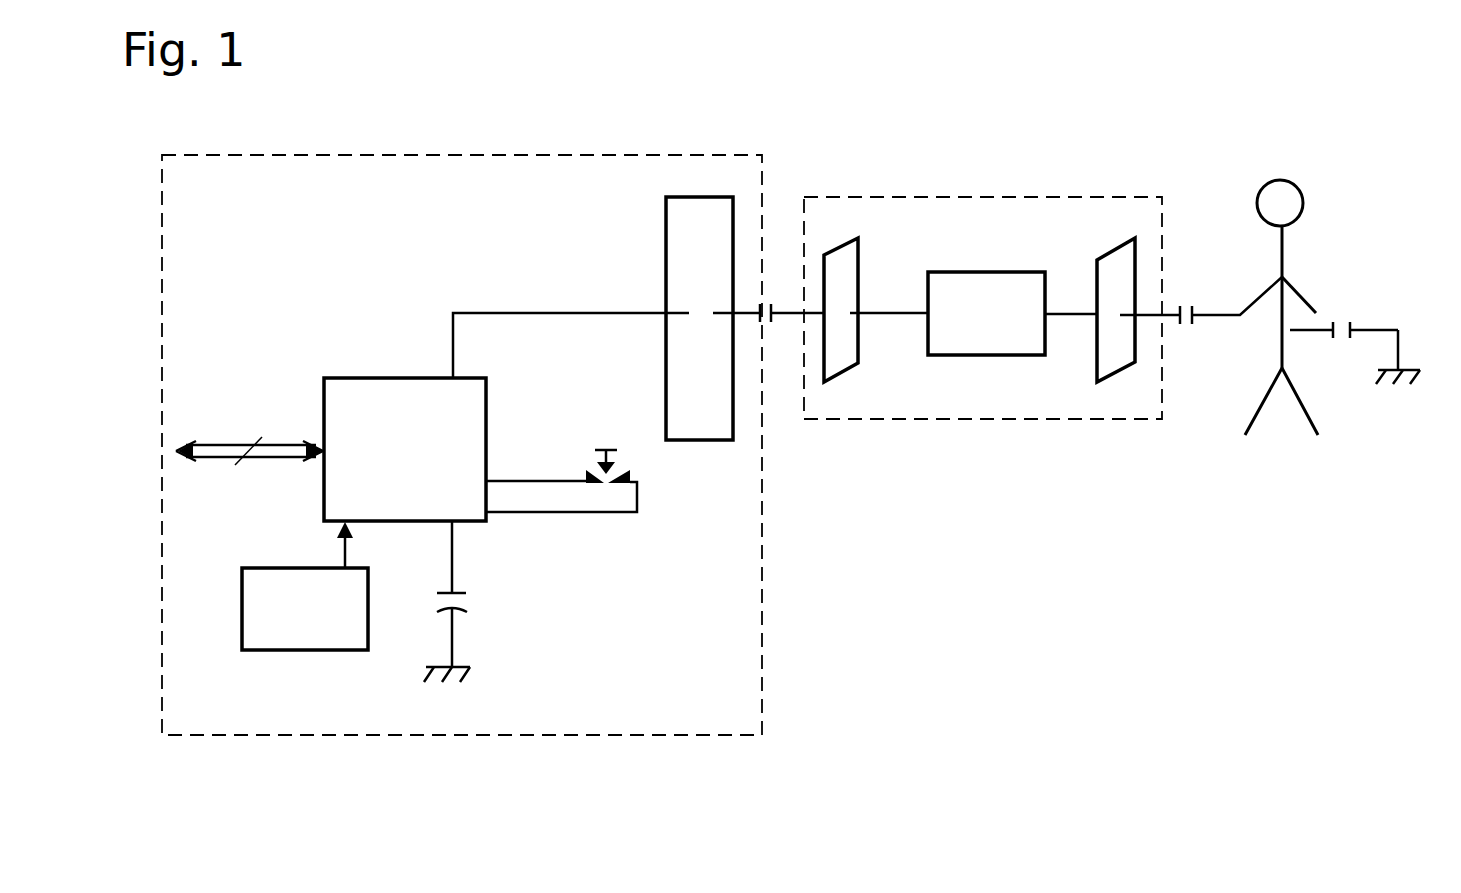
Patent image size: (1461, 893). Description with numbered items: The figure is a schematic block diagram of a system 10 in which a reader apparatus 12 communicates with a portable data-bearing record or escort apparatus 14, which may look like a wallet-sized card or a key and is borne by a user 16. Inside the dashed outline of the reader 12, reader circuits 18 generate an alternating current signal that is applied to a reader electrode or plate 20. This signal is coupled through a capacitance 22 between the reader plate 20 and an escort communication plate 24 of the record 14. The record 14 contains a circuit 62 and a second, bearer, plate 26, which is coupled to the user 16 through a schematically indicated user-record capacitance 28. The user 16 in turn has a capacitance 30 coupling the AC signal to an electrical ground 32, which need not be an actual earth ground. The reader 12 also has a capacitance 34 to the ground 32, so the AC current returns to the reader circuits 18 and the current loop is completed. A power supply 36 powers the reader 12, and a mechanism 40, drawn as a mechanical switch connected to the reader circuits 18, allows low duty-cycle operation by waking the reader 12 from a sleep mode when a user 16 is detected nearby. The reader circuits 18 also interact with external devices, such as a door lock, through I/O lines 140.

The system 10 is at (1008, 603).
The reader apparatus 12 is at (766, 678).
The portable data-bearing record or escort apparatus 14 is at (1036, 422).
The user 16 is at (1275, 200).
The reader circuits 18 is at (405, 393).
The reader electrode or plate 20 is at (693, 422).
The capacitance 22 is at (764, 335).
The escort communication plate 24 is at (840, 260).
The bearer plate 26 is at (1110, 262).
The user-record capacitance 28 is at (1190, 335).
The capacitance 30 is at (1342, 325).
The electrical ground 32 is at (455, 685).
The capacitance 34 is at (458, 614).
The power supply 36 is at (283, 641).
The mechanism 40 is at (617, 457).
The circuit 62 is at (944, 288).
The I/O lines 140 is at (278, 462).